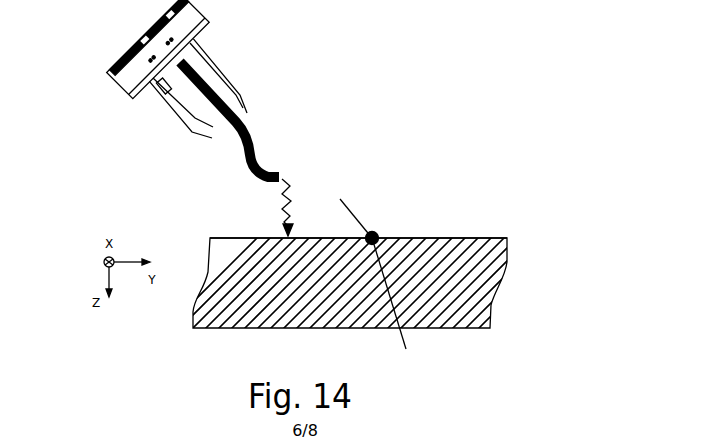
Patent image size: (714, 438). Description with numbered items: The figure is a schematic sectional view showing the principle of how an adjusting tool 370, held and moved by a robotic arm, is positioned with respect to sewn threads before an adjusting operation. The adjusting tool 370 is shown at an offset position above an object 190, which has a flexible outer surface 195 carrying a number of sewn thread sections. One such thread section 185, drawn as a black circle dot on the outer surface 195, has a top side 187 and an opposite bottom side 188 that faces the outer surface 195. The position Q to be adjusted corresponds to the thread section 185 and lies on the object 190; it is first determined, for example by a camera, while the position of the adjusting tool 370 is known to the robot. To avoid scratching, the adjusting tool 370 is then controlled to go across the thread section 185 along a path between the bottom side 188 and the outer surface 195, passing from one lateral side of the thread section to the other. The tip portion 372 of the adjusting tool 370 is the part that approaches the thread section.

The adjusting tool 370 is at (222, 98).
The nozzle 372 is at (234, 175).
The thread section 185 is at (388, 231).
The top side 187 is at (346, 209).
The bottom side 188 is at (401, 304).
The object 190 is at (512, 297).
The outer surface 195 is at (478, 238).
The position to be adjusted Q is at (386, 222).